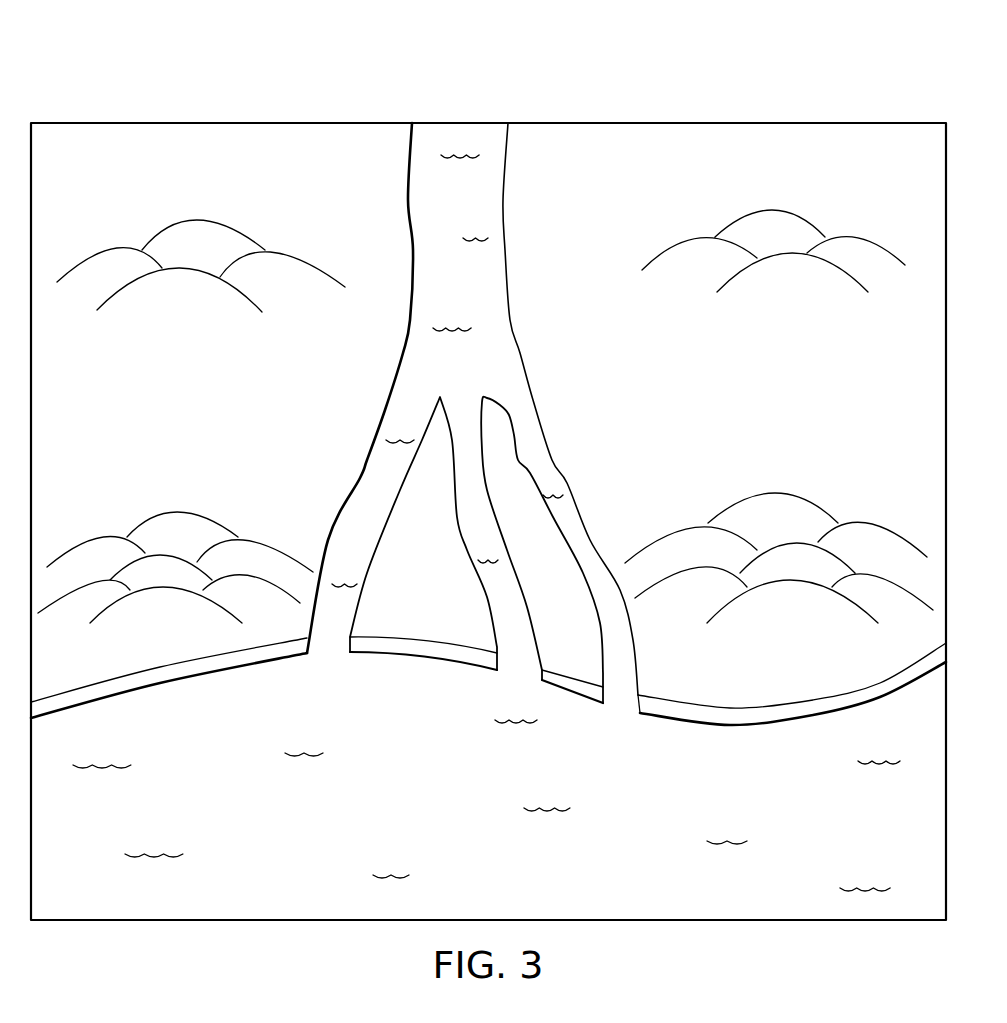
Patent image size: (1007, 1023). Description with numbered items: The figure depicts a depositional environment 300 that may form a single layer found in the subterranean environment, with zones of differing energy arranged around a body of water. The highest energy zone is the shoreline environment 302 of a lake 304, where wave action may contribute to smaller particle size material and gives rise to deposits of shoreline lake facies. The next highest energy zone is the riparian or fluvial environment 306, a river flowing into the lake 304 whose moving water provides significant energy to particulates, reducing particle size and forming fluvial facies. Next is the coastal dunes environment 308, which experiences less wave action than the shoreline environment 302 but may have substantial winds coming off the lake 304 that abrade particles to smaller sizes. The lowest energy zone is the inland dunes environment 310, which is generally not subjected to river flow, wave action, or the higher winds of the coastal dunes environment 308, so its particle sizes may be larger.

The depositional environment 300 is at (348, 75).
The shoreline environment 302 is at (745, 705).
The lake 304 is at (473, 795).
The fluvial environment 306 is at (403, 357).
The coastal dunes environment 308 is at (177, 511).
The dunes environment 310 is at (207, 220).